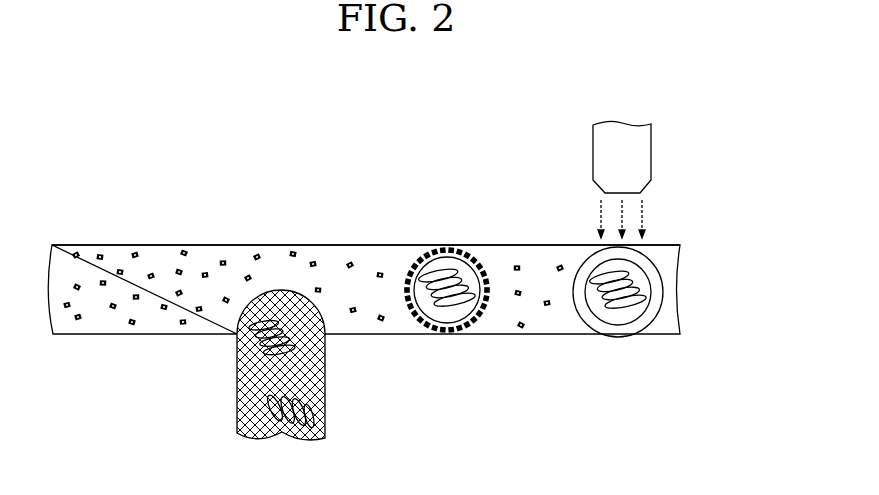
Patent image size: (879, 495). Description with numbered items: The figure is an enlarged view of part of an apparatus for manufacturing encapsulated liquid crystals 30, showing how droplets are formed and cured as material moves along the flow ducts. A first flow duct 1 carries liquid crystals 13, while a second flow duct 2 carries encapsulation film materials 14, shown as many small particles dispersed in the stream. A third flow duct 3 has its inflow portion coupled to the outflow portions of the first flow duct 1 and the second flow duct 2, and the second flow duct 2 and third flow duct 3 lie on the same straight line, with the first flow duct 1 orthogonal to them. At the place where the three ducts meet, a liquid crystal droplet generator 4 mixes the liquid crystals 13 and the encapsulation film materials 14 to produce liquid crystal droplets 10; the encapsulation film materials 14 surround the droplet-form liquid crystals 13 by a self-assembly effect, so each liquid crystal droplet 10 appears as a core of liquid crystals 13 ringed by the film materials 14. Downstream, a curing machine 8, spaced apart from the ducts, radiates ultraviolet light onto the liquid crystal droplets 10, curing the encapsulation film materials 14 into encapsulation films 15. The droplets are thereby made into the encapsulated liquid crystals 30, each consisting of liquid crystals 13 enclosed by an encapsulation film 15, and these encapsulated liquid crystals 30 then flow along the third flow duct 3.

The first flow duct 1 is at (237, 423).
The second flow duct 2 is at (198, 243).
The third flow duct 3 is at (373, 243).
The liquid crystal droplet generator 4 is at (277, 280).
The curing machine 8 is at (645, 150).
The liquid crystal droplets 10 is at (517, 404).
The liquid crystals 13 is at (270, 400).
The encapsulation film materials 14 is at (118, 272).
The encapsulation films 15 is at (655, 275).
The encapsulated liquid crystals 30 is at (683, 292).